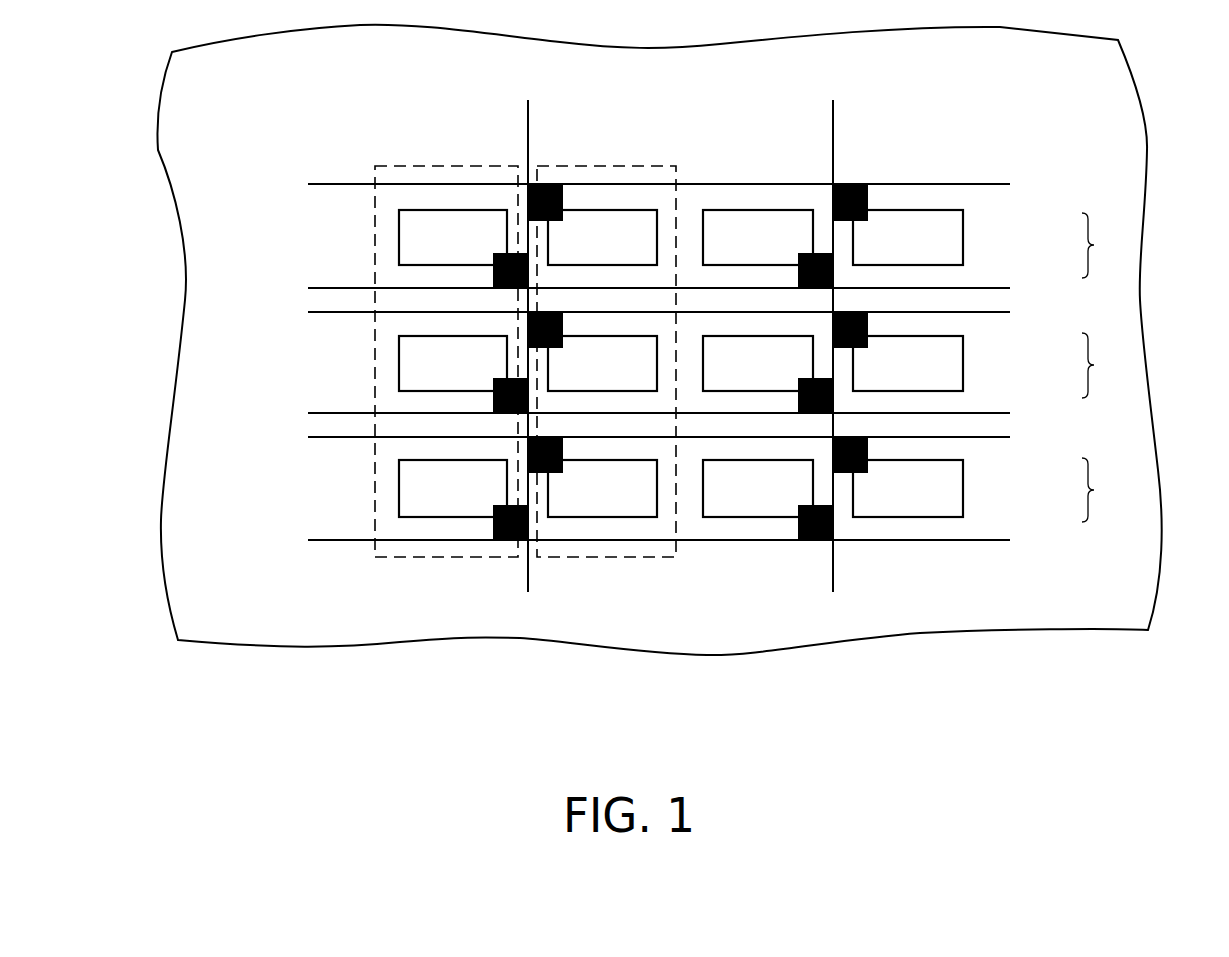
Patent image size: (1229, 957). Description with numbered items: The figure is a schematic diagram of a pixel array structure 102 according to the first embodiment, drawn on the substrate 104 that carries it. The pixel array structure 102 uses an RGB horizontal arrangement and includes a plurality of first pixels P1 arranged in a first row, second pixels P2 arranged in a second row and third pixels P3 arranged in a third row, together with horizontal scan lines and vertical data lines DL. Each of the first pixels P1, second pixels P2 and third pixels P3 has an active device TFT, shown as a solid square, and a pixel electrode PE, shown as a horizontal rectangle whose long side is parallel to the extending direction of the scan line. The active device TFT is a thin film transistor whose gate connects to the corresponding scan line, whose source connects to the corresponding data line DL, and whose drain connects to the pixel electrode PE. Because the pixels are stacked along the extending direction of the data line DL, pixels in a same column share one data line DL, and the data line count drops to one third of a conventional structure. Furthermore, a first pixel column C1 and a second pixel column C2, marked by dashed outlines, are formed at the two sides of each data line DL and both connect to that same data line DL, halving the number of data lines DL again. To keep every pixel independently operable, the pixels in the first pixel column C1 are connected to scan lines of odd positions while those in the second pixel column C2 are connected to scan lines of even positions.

The pixel array structure 102 is at (659, 388).
The substrate 104 is at (1108, 118).
The data line DL is at (680, 325).
The active device TFT is at (868, 195).
The pixel electrode PE is at (963, 237).
The first pixel P1 is at (1103, 245).
The second pixel P2 is at (1103, 365).
The third pixel P3 is at (1103, 490).
The first pixel column C1 is at (605, 560).
The second pixel column C2 is at (452, 560).